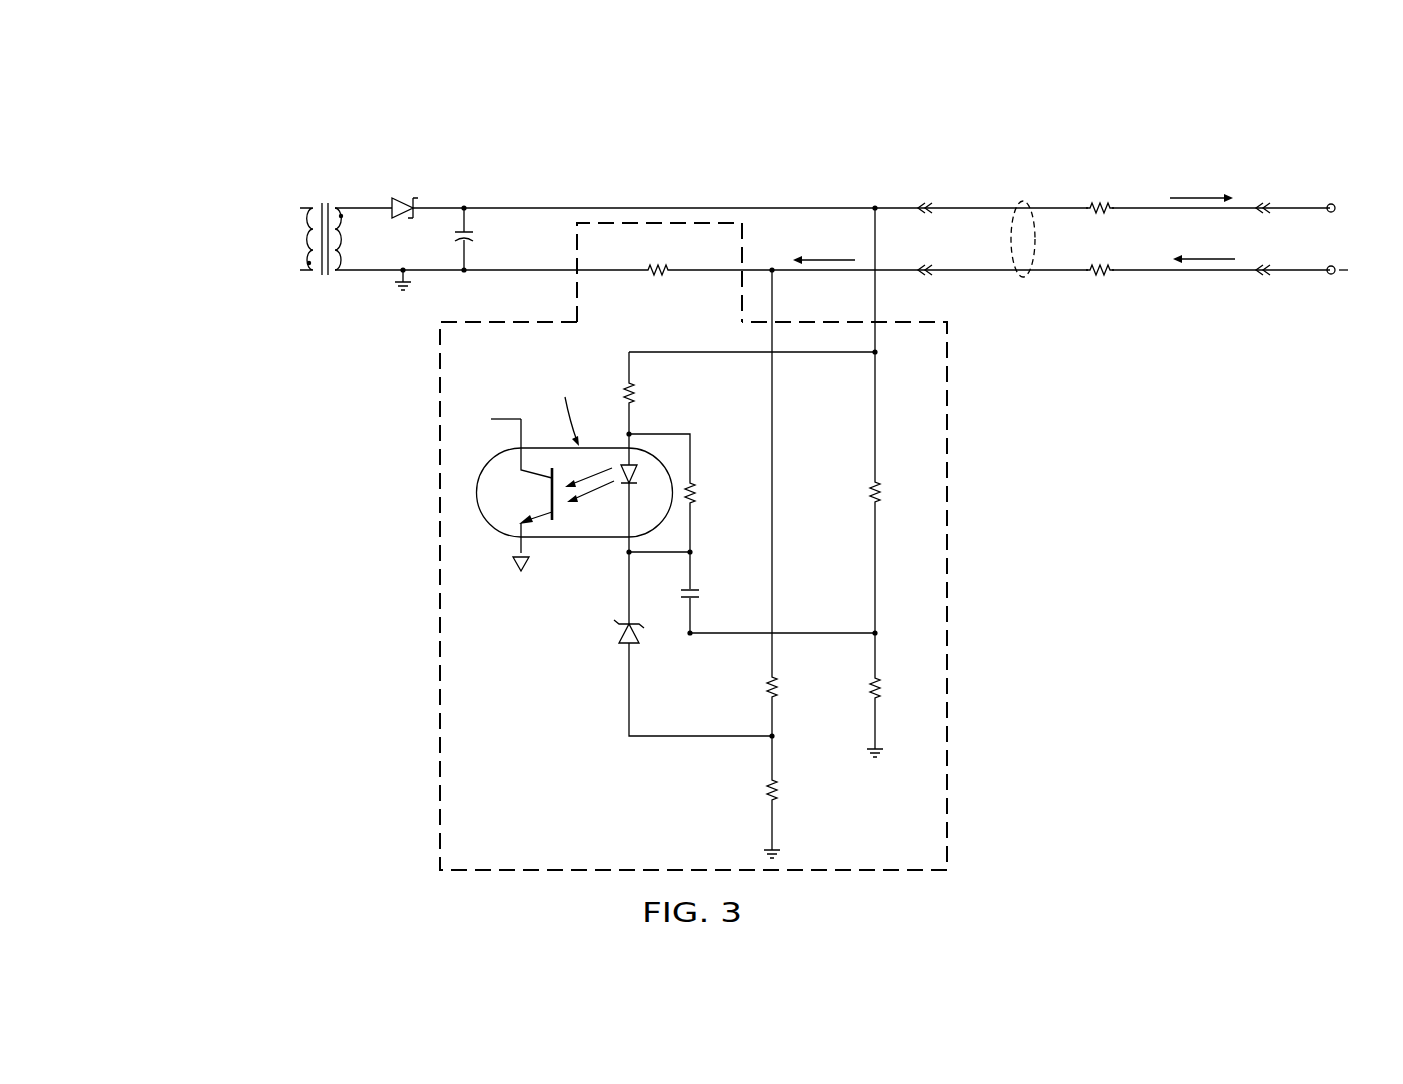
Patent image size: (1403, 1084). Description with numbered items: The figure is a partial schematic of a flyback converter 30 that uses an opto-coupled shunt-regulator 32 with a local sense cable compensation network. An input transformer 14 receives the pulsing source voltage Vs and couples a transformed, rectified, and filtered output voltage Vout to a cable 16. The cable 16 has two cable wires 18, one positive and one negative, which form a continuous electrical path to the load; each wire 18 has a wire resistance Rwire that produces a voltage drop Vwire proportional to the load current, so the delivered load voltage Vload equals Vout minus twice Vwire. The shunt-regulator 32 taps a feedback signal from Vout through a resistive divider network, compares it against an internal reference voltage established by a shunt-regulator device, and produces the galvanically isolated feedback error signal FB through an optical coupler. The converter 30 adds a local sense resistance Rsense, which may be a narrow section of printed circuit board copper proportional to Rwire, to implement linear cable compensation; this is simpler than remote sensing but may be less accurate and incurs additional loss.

The input transformer 14 is at (326, 199).
The cable 16 is at (1023, 200).
The cable wire 18 is at (967, 206).
The flyback converter 30 is at (600, 143).
The opto-coupled shunt-regulator 32 is at (551, 819).